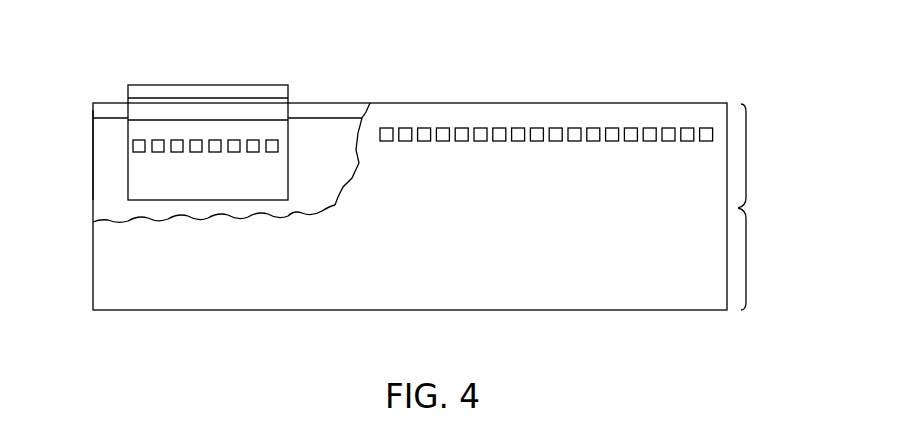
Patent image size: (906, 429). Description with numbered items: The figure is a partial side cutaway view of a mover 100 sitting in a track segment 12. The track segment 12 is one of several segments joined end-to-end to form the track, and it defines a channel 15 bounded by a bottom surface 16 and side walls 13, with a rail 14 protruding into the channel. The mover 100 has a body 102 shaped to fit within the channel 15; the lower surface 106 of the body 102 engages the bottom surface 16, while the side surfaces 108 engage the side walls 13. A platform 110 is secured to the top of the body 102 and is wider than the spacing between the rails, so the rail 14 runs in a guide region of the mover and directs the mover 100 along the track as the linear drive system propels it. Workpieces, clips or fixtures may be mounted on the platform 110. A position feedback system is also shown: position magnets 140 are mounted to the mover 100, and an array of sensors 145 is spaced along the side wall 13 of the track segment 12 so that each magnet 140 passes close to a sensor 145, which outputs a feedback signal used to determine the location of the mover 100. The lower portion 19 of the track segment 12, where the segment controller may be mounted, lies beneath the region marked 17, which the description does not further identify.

The track segment 12 is at (697, 74).
The side wall 13 is at (333, 154).
The rail 14 is at (343, 103).
The channel 15 is at (103, 154).
The bottom surface 16 is at (301, 212).
The upper portion 17 is at (750, 153).
The lower portion 19 is at (750, 258).
The mover 100 is at (202, 84).
The body 102 is at (213, 183).
The lower surface 106 is at (168, 204).
The side surfaces 108 is at (199, 191).
The platform 110 is at (152, 93).
The position magnets 140 is at (272, 152).
The sensors 145 is at (573, 141).